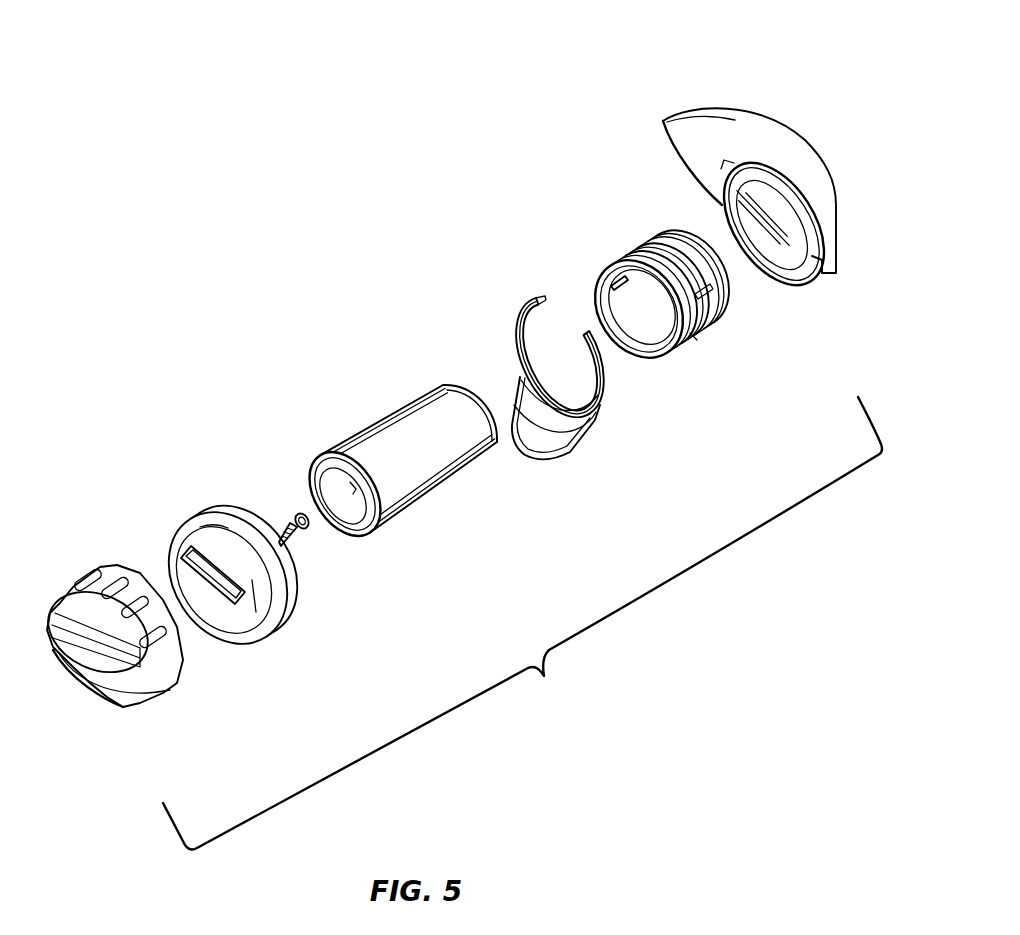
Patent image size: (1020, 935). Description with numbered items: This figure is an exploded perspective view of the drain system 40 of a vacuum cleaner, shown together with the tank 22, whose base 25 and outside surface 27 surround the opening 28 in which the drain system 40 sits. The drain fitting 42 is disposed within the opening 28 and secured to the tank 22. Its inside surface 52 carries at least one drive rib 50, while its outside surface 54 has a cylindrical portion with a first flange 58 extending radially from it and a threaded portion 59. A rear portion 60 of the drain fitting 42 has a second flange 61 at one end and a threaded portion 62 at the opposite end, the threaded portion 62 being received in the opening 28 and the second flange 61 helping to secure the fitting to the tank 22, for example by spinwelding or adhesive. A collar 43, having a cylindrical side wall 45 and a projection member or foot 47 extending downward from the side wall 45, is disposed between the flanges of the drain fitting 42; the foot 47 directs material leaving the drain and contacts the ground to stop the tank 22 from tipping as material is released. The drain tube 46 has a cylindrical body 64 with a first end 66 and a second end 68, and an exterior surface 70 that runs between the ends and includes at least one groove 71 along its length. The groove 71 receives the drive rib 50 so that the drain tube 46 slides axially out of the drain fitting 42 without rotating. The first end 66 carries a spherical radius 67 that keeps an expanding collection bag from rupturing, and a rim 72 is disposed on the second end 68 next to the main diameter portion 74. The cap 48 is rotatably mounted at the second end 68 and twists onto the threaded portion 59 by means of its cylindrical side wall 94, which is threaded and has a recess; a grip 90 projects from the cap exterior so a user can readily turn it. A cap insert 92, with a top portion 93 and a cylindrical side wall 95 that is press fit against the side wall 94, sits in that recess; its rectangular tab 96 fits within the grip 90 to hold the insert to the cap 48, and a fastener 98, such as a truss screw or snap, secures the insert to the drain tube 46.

The tank 22 is at (741, 159).
The base 25 is at (697, 153).
The outside surface 27 is at (673, 142).
The opening 28 is at (769, 196).
The drain system 40 is at (522, 623).
The drain fitting 42 is at (682, 311).
The collar 43 is at (558, 358).
The cylindrical side wall 45 is at (612, 383).
The drain tube 46 is at (383, 454).
The projection member or foot 47 is at (553, 440).
The cap 48 is at (173, 579).
The drive rib 50 is at (602, 284).
The inside surface 52 is at (652, 340).
The outside surface 54 is at (704, 344).
The first flange 58 is at (719, 326).
The threaded portion 59 is at (692, 336).
The rear portion 60 is at (742, 314).
The second flange 61 is at (650, 236).
The threaded portion 62 is at (722, 272).
The cylindrical body 64 is at (385, 412).
The first end 66 is at (477, 410).
The spherical radius 67 is at (458, 392).
The second end 68 is at (320, 457).
The exterior surface 70 is at (355, 440).
The groove 71 is at (433, 392).
The rim 72 is at (373, 523).
The main diameter portion 74 is at (403, 483).
The grip 90 is at (73, 663).
The cap insert 92 is at (275, 602).
The top portion 93 is at (192, 538).
The cylindrical side wall 94 is at (177, 667).
The cylindrical side wall 95 is at (218, 510).
The tab 96 is at (237, 600).
The fastener 98 is at (300, 533).